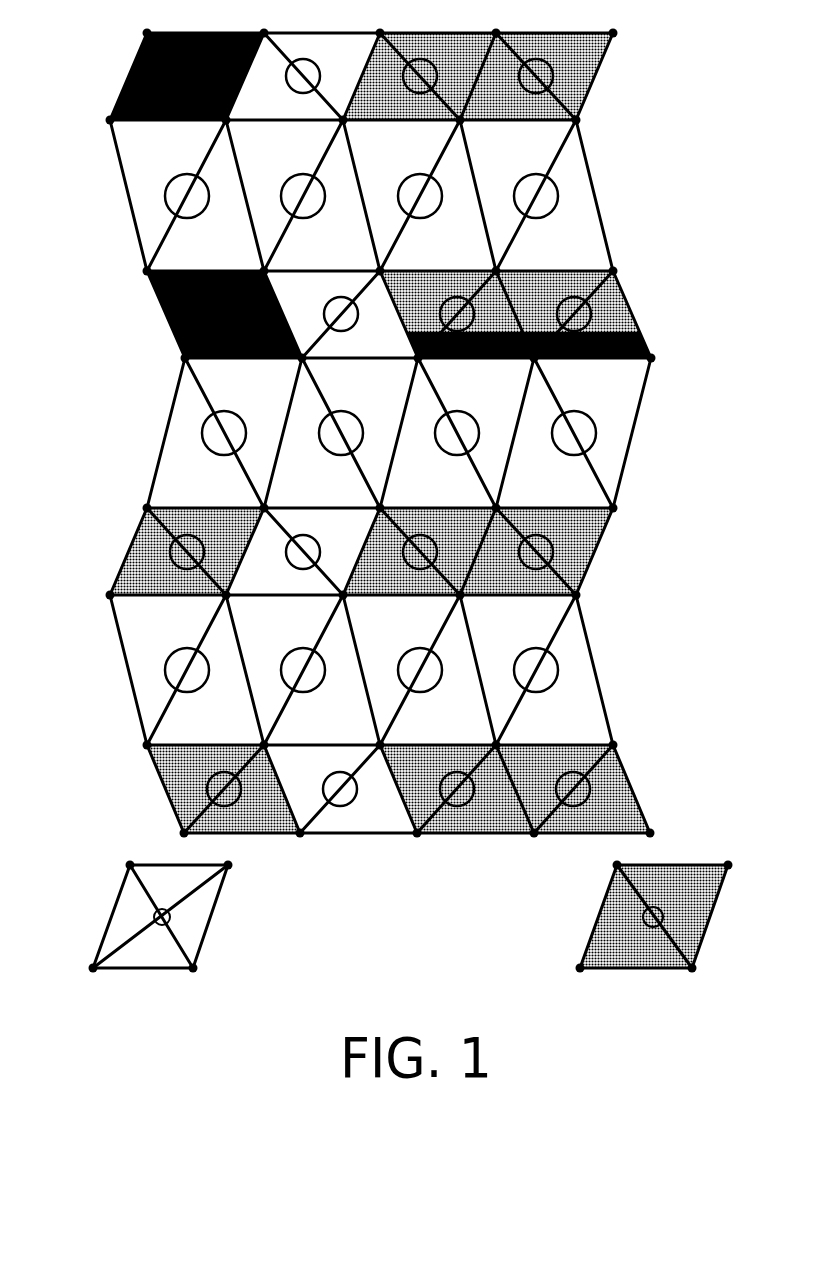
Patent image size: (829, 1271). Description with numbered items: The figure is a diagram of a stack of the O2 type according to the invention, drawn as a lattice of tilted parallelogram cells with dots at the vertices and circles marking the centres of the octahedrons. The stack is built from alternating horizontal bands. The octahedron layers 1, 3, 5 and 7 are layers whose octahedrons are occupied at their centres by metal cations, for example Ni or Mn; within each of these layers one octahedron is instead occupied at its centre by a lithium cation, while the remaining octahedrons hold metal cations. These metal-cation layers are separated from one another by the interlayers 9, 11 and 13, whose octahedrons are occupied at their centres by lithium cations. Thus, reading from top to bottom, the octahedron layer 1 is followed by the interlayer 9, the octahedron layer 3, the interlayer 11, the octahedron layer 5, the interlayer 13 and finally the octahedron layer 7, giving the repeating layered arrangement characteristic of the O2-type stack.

The octahedron layer 1 is at (582, 65).
The octahedron layer 3 is at (615, 308).
The octahedron layer 5 is at (595, 545).
The octahedron layer 7 is at (617, 792).
The interlayer 9 is at (575, 195).
The interlayer 11 is at (626, 416).
The interlayer 13 is at (583, 682).